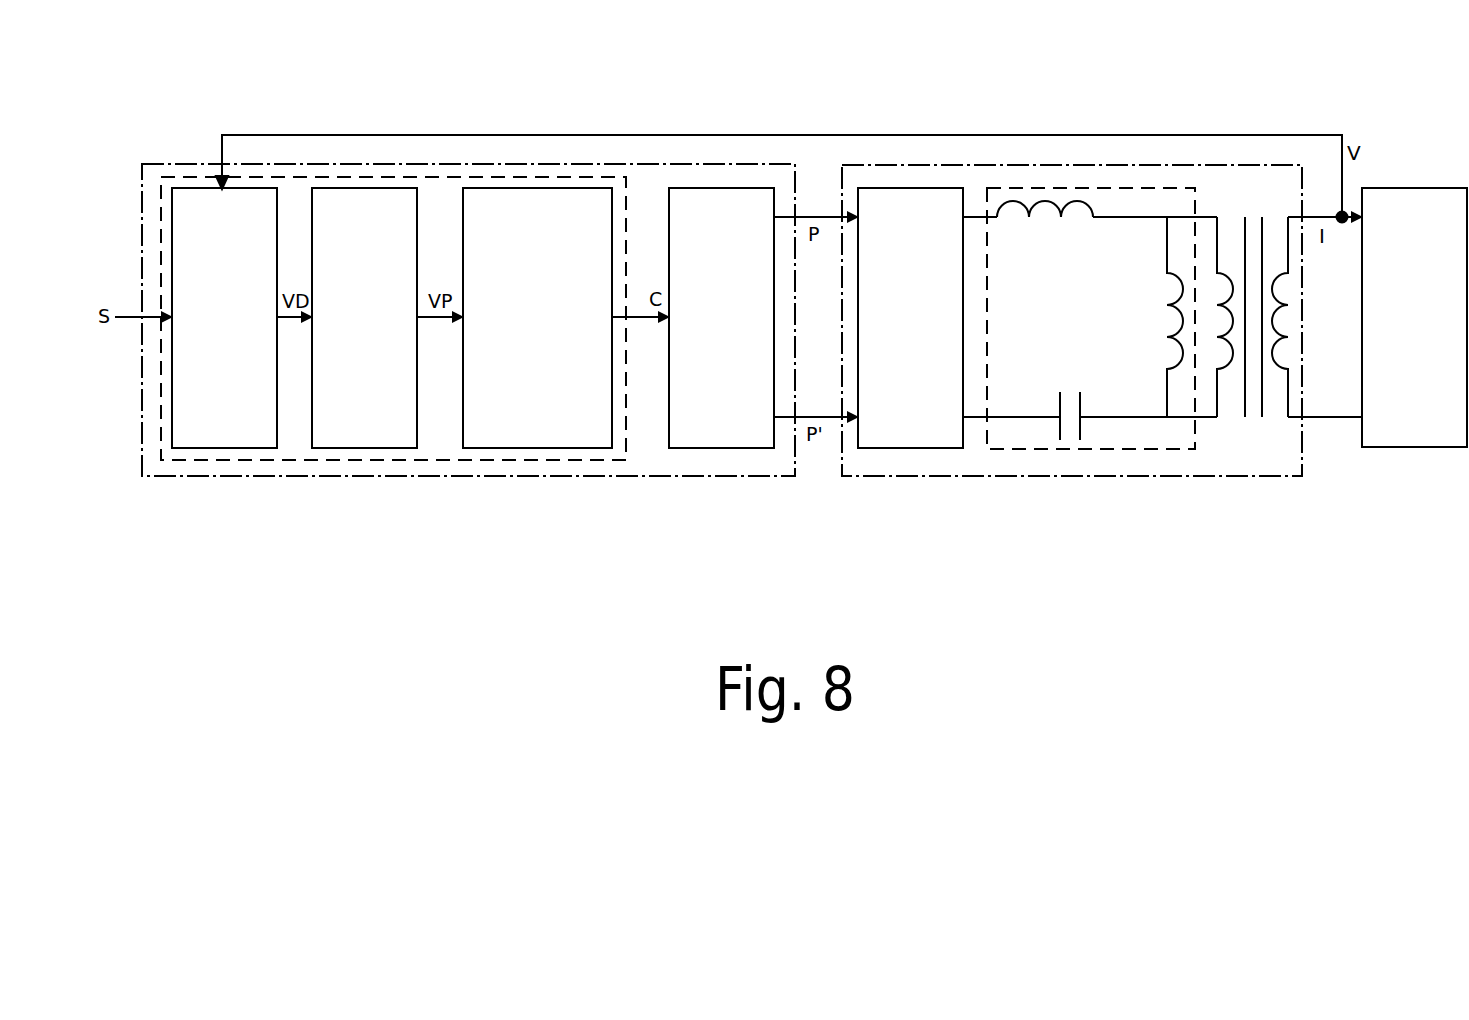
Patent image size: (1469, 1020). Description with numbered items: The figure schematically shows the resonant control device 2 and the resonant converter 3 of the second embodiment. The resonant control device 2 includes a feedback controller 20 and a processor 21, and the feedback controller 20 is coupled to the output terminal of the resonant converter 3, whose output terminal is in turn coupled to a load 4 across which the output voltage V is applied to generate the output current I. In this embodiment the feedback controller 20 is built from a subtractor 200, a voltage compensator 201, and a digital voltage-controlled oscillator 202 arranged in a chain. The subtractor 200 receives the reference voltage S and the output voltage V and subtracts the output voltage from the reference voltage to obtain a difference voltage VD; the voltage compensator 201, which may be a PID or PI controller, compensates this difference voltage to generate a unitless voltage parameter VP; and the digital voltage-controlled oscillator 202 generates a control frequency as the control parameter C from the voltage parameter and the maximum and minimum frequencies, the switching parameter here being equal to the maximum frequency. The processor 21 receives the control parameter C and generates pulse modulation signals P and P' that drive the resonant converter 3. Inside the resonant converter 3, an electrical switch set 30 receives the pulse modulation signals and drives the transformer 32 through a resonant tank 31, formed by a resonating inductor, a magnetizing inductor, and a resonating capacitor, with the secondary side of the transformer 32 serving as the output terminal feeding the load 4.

The resonant control device 2 is at (688, 164).
The feedback controller 20 is at (190, 177).
The subtractor 200 is at (237, 448).
The voltage compensator 201 is at (372, 448).
The digital voltage-controlled oscillator 202 is at (510, 448).
The processor 21 is at (745, 447).
The resonant converter 3 is at (1200, 165).
The electrical switch set 30 is at (922, 188).
The resonant tank 31 is at (1157, 188).
The transformer 32 is at (1262, 217).
The load 4 is at (1415, 188).